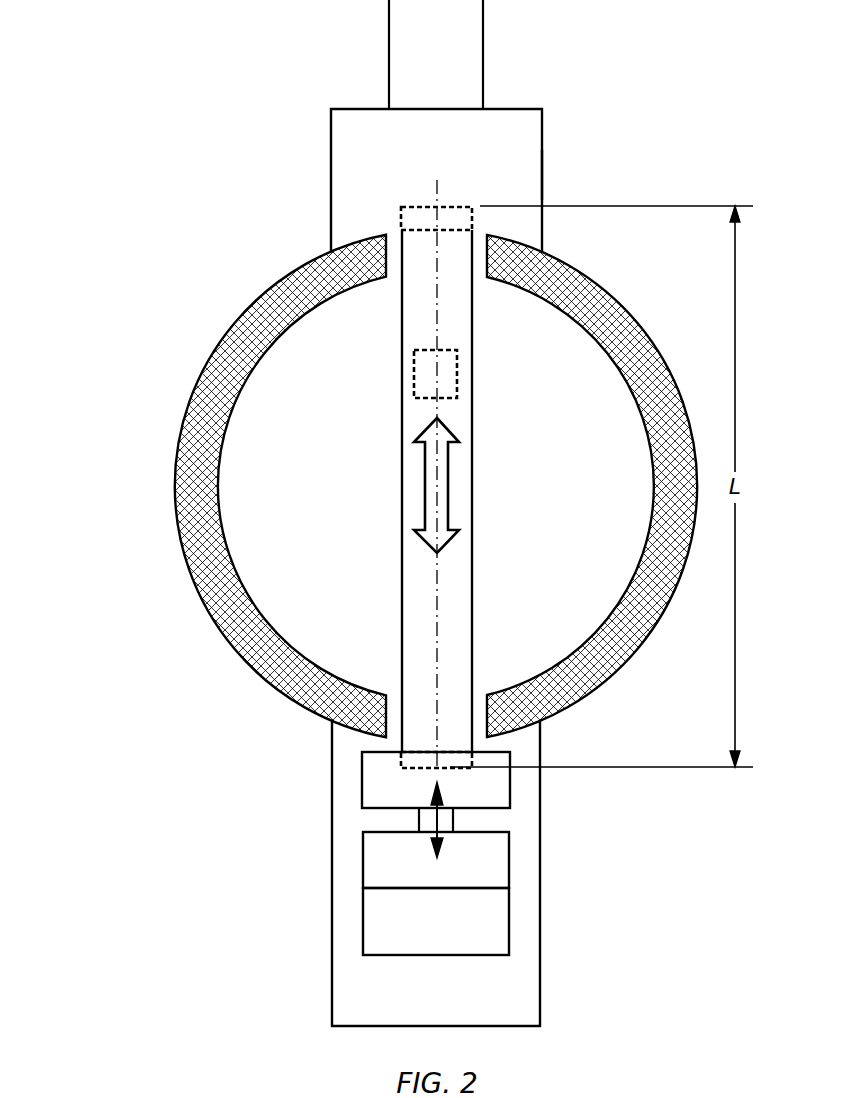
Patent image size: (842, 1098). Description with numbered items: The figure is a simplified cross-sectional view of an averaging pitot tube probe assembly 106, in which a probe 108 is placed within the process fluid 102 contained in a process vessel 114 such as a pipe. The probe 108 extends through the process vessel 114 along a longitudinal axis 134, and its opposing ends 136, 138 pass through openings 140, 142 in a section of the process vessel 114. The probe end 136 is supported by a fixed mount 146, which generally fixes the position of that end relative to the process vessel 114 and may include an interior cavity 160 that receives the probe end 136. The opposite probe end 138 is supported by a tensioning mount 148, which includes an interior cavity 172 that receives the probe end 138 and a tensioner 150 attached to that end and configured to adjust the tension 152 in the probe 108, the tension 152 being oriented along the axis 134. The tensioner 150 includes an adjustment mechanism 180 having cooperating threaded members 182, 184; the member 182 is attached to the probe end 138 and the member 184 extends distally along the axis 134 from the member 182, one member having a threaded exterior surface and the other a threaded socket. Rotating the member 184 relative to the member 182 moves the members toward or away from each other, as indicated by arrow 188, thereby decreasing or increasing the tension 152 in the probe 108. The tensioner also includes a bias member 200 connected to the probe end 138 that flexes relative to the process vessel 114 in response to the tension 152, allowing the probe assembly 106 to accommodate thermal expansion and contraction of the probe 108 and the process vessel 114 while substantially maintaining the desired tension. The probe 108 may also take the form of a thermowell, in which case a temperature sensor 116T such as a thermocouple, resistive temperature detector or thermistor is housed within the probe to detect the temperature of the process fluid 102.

The probe assembly 106 is at (168, 98).
The process fluid 102 is at (413, 486).
The probe 108 is at (424, 474).
The process vessel 114 is at (222, 342).
The temperature sensor 116T is at (450, 372).
The longitudinal axis 134 is at (446, 600).
The probe end 136 is at (406, 214).
The probe end 138 is at (405, 768).
The opening 140 is at (396, 274).
The opening 142 is at (484, 692).
The fixed mount 146 is at (533, 137).
The tensioning mount 148 is at (487, 873).
The tensioner 150 is at (340, 935).
The tension 152 is at (433, 480).
The interior cavity 160 is at (526, 176).
The interior cavity 172 is at (522, 878).
The adjustment mechanism 180 is at (429, 842).
The threaded member 182 is at (504, 791).
The threaded member 184 is at (375, 858).
The arrow 188 is at (455, 828).
The bias member 200 is at (495, 920).